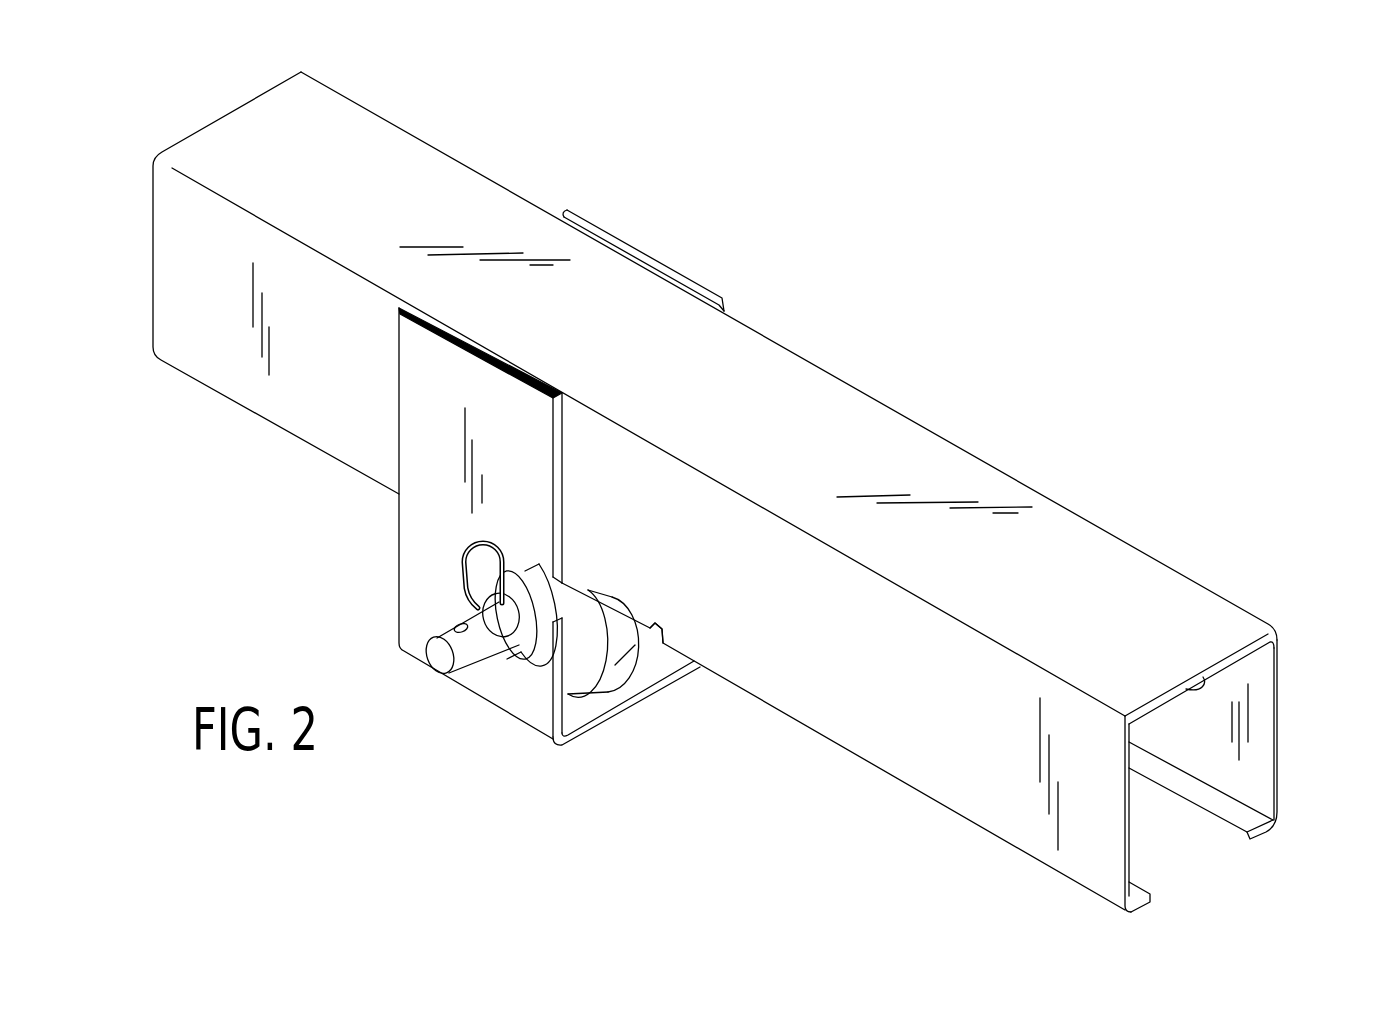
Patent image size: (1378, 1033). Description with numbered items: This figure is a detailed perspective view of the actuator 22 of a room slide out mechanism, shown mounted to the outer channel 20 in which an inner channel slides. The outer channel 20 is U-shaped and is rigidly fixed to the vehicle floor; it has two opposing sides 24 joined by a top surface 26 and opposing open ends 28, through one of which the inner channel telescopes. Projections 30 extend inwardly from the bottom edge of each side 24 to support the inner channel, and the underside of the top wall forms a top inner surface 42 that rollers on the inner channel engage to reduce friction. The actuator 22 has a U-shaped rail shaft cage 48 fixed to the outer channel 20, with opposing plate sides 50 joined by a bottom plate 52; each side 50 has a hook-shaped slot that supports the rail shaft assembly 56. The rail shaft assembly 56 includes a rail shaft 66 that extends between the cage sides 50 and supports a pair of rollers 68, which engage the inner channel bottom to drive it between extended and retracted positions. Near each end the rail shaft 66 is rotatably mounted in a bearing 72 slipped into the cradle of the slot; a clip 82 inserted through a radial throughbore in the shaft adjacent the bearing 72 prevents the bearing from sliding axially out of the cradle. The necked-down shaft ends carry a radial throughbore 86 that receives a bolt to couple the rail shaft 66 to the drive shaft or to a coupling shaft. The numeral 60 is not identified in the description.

The outer channel 20 is at (722, 494).
The actuator 22 is at (566, 560).
The opposing sides 24 is at (1129, 821).
The top surface 26 is at (1053, 595).
The open ends 28 is at (135, 262).
The projections 30 is at (1152, 899).
The top inner surface 42 is at (1186, 689).
The rail shaft cage 48 is at (566, 547).
The sides 50 is at (447, 477).
The bottom plate 52 is at (633, 704).
The rail shaft assembly 56 is at (646, 663).
The edge flange of plate 60 is at (557, 546).
The rail shaft 66 is at (470, 651).
The rollers 68 is at (633, 628).
The bearing 72 is at (526, 603).
The clip 82 is at (474, 548).
The radial throughbore 86 is at (461, 624).